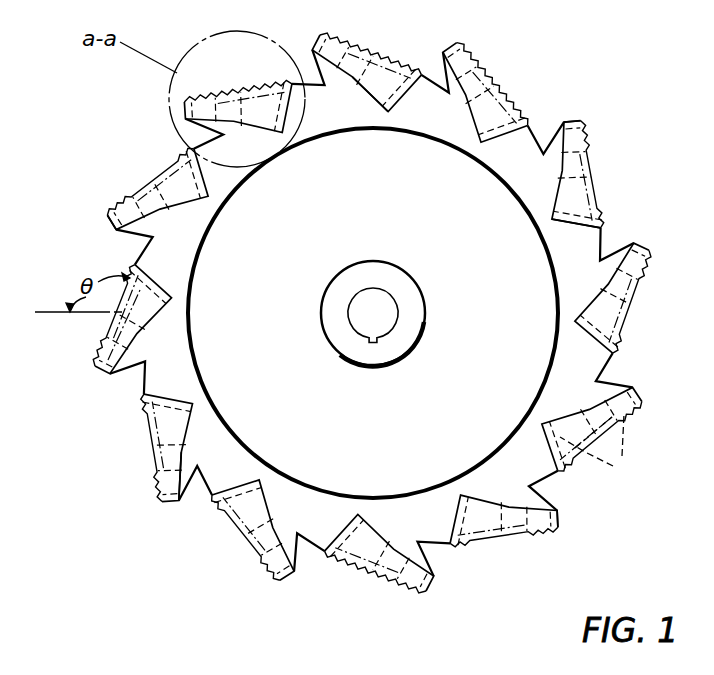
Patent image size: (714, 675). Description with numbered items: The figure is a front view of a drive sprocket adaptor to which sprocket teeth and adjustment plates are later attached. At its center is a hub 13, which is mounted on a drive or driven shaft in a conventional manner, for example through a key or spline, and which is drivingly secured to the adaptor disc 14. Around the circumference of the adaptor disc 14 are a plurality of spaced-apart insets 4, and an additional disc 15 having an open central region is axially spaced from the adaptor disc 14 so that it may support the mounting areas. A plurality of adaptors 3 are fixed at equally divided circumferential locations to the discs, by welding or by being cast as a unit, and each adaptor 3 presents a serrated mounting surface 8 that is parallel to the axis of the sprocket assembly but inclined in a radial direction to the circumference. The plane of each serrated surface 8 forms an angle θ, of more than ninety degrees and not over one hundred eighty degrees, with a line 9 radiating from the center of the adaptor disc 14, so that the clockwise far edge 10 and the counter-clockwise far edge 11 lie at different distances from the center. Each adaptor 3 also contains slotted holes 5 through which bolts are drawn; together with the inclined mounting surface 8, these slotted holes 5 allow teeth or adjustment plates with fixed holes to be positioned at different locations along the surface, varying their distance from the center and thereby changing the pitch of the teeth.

The adaptor 3 is at (565, 121).
The inset 4 is at (367, 92).
The slotted hole 5 is at (593, 448).
The serrated mounting surface 8 is at (105, 212).
The radial line 9 is at (48, 313).
The clockwise far edge 10 is at (603, 229).
The counter clockwise far edge 11 is at (578, 120).
The hub 13 is at (425, 311).
The adaptor disc 14 is at (388, 420).
The additional disc 15 is at (185, 260).